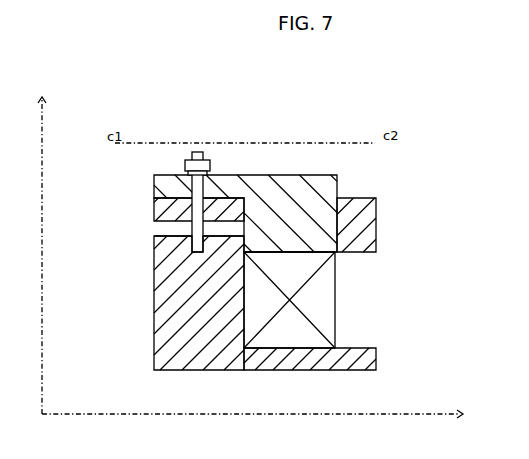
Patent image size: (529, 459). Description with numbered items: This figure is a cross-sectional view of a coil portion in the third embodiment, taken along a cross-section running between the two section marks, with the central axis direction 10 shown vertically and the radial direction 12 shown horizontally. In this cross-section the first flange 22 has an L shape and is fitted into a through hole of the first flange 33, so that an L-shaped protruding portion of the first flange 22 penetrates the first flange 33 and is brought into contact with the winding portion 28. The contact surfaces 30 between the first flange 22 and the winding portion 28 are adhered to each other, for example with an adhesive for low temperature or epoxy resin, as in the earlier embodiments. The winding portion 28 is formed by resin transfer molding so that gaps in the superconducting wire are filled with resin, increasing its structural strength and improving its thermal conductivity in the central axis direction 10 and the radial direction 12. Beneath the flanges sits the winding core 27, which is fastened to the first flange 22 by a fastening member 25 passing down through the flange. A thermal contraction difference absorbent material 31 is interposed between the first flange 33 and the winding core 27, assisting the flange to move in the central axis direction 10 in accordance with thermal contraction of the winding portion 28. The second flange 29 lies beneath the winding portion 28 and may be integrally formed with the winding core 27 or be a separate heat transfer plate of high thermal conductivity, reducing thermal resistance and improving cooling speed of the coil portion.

The central axis direction 10 is at (32, 242).
The radial direction 12 is at (270, 413).
The first flange 22 is at (337, 180).
The fastening member 25 is at (195, 194).
The winding core 27 is at (172, 313).
The winding portion 28 is at (317, 312).
The second flange 29 is at (295, 363).
The contact surfaces 30 is at (293, 255).
The thermal contraction difference absorbent material 31 is at (160, 234).
The first flange 33 is at (370, 241).